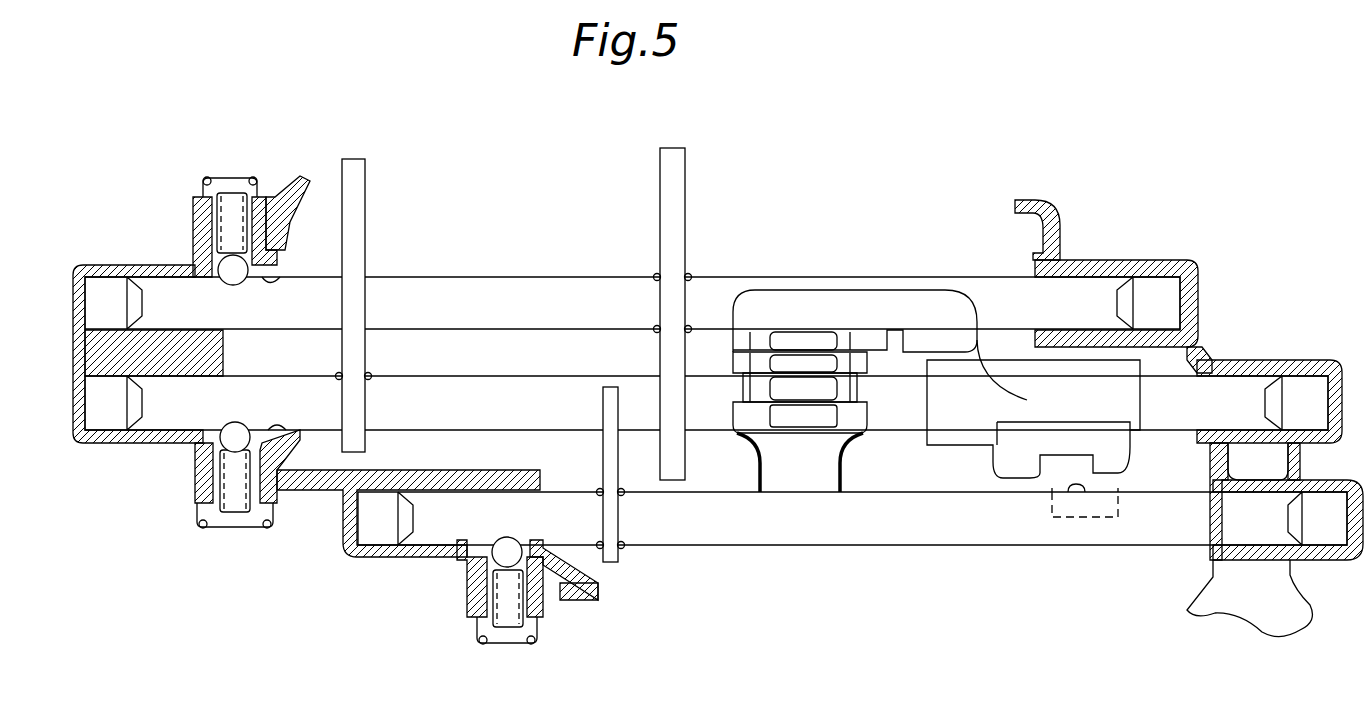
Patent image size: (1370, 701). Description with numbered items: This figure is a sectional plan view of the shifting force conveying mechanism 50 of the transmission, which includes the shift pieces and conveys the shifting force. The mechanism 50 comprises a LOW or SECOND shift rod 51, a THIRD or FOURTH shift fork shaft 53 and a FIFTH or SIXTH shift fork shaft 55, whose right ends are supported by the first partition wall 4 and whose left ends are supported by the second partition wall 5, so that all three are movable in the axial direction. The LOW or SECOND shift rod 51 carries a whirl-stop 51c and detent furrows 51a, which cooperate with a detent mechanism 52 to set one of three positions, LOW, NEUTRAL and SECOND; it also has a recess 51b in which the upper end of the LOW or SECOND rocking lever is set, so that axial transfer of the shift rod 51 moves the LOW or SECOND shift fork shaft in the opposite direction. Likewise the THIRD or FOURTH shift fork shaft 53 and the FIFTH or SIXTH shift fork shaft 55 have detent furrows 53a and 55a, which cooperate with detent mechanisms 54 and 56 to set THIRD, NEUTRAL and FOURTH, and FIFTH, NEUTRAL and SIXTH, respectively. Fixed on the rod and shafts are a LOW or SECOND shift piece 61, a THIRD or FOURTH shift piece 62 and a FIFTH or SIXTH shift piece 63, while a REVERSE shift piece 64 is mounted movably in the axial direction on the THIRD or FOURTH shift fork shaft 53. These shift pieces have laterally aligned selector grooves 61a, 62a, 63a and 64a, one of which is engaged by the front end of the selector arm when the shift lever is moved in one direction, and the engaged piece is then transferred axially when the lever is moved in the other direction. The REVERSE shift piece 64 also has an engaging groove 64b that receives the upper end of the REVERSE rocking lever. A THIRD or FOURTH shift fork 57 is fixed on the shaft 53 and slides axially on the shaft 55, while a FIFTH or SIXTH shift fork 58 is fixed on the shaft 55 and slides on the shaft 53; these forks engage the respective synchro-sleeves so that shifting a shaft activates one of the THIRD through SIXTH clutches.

The first partition wall 4 is at (1200, 347).
The second partition wall 5 is at (312, 488).
The shifting force conveying mechanism 50 is at (1081, 190).
The LOW or SECOND shift rod 51 is at (740, 523).
The detent furrows 51a is at (560, 560).
The recess 51b is at (1072, 492).
The whirl-stop 51c is at (605, 446).
The detent mechanism 52 is at (507, 557).
The THIRD or FOURTH shift fork shaft 53 is at (527, 405).
The detent furrows 53a is at (278, 430).
The detent mechanism 54 is at (233, 442).
The FIFTH or SIXTH shift fork shaft 55 is at (527, 298).
The detent furrows 55a is at (297, 257).
The detent mechanism 56 is at (237, 268).
The THIRD or FOURTH shift fork 57 is at (358, 210).
The FIFTH or SIXTH shift fork 58 is at (668, 183).
The LOW or SECOND shift piece 61 is at (850, 462).
The selector groove 61a is at (820, 420).
The THIRD or FOURTH shift piece 62 is at (858, 387).
The selector groove 62a is at (800, 383).
The FIFTH or SIXTH shift piece 63 is at (735, 357).
The selector groove 63a is at (822, 363).
The REVERSE shift piece 64 is at (930, 307).
The selector groove 64a is at (788, 342).
The engaging groove 64b is at (1037, 492).